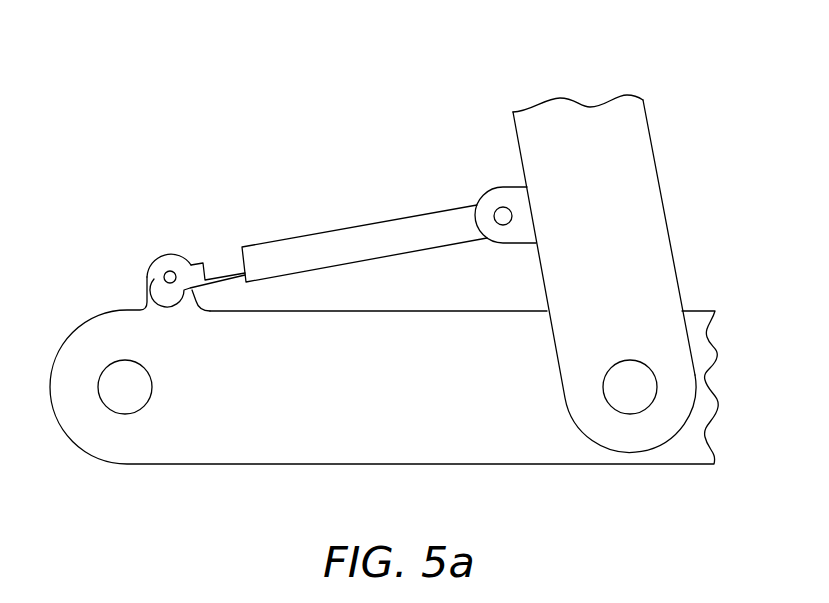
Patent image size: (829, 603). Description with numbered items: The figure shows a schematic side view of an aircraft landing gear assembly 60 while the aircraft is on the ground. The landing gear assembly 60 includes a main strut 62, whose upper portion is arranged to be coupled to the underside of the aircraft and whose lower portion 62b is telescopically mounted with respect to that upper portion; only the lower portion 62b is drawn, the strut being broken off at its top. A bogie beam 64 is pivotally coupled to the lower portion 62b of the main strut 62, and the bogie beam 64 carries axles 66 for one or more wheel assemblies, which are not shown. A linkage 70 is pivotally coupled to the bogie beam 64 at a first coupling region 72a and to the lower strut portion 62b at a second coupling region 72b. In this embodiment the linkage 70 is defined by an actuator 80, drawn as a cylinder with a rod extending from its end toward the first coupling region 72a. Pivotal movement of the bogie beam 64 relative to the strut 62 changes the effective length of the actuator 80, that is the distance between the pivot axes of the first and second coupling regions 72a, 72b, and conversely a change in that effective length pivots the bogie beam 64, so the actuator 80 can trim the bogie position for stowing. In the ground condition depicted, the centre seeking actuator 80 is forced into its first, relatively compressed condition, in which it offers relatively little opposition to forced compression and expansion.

The landing gear assembly 60 is at (627, 235).
The main strut 62 is at (652, 130).
The lower portion 62b is at (667, 217).
The bogie beam 64 is at (384, 344).
The axles 66 is at (152, 387).
The linkage 70 is at (373, 212).
The first coupling region 72a is at (150, 270).
The second coupling region 72b is at (497, 186).
The actuator 80 is at (283, 238).